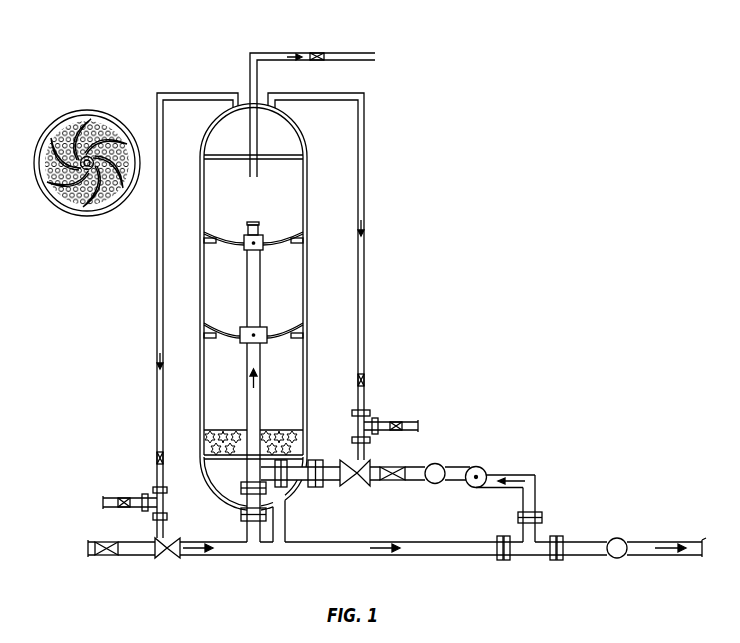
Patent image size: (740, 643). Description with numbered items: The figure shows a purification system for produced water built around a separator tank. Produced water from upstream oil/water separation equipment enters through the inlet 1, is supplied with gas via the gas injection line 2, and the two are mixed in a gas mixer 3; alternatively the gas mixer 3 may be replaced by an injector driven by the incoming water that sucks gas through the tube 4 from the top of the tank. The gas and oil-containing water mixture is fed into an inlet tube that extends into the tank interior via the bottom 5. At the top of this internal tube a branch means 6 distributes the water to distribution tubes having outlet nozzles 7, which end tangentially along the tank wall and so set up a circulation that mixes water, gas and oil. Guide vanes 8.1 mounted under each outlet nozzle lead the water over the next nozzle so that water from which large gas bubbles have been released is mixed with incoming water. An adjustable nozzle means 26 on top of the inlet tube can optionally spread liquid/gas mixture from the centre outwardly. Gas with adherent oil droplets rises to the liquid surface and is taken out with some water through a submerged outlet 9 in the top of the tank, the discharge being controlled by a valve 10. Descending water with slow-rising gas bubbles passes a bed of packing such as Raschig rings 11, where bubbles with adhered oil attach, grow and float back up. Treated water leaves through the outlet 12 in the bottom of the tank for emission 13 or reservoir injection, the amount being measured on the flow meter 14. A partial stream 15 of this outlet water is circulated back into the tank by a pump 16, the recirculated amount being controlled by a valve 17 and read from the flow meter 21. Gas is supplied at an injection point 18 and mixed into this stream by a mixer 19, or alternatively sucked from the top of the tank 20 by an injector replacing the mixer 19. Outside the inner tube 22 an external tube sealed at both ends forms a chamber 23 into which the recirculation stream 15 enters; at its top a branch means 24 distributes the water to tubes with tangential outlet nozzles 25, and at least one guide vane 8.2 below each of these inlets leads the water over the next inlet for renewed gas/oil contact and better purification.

The inlet 1 is at (89, 556).
The gas injection line 2 is at (92, 500).
The gas mixer 3 is at (175, 556).
The tube 4 is at (200, 93).
The bottom 5 is at (242, 519).
The branch means 6 is at (256, 243).
The outlet nozzles 7 is at (304, 236).
The guide vanes 8.1 is at (297, 248).
The guide vane 8.2 is at (297, 340).
The submerged outlet 9 is at (257, 152).
The valve 10 is at (324, 53).
The Raschig rings 11 is at (201, 432).
The outlet 12 is at (288, 499).
The emission 13 is at (667, 555).
The flow meter 14 is at (618, 559).
The partial stream 15 is at (545, 516).
The pump 16 is at (480, 466).
The valve 17 is at (390, 482).
The injection point 18 is at (418, 424).
The mixer 19 is at (362, 482).
The top of the tank 20 is at (366, 217).
The flow meter 21 is at (436, 484).
The inner tube 22 is at (262, 408).
The chamber 23 is at (246, 407).
The branch means 24 is at (254, 337).
The outlet nozzles 25 is at (214, 330).
The adjustable nozzle means 26 is at (250, 244).